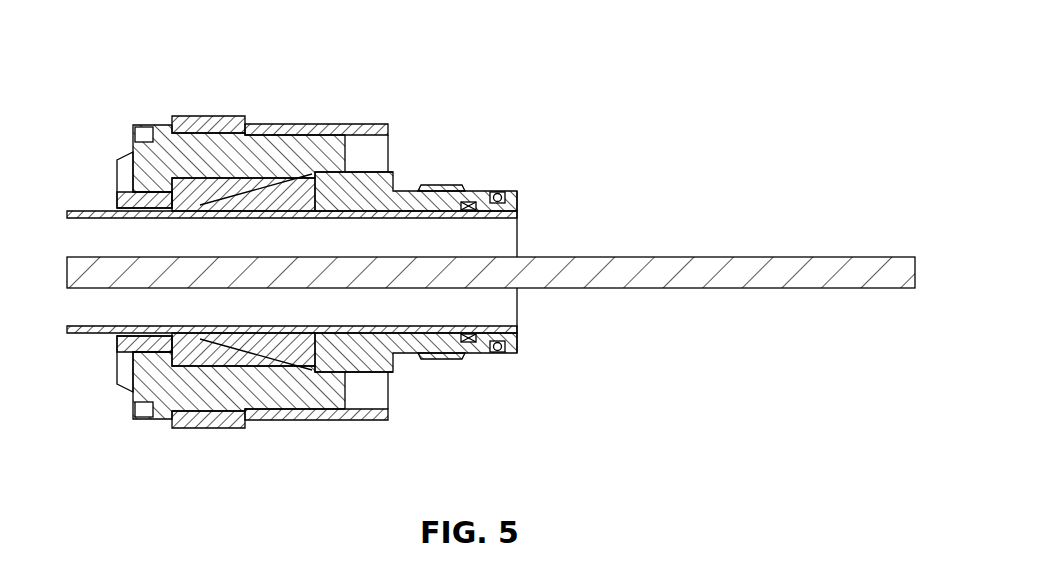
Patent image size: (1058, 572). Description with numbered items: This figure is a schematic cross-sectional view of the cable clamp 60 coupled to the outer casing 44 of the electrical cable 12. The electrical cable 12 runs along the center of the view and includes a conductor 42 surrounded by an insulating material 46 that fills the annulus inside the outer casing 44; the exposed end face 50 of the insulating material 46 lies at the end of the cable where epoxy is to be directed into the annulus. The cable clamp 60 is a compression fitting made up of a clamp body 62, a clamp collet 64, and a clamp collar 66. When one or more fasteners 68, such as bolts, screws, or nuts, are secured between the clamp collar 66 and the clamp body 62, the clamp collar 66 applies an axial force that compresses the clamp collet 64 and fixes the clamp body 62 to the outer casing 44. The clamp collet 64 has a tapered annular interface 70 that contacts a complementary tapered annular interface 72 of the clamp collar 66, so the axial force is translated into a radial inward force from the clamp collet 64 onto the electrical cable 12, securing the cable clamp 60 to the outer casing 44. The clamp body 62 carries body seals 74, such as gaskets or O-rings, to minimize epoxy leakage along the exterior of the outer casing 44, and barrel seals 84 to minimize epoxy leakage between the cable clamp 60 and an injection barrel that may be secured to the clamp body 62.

The electrical cable 12 is at (347, 273).
The conductor 42 is at (702, 292).
The outer casing 44 is at (519, 333).
The insulating material 46 is at (519, 294).
The end face 50 is at (522, 244).
The cable clamp 60 is at (347, 44).
The clamp body 62 is at (363, 186).
The clamp collet 64 is at (279, 188).
The clamp collar 66 is at (207, 117).
The fasteners 68 is at (241, 158).
The tapered annular interface 70 is at (229, 360).
The complementary tapered annular interface 72 is at (221, 337).
The body seals 74 is at (472, 198).
The barrel seals 84 is at (498, 192).